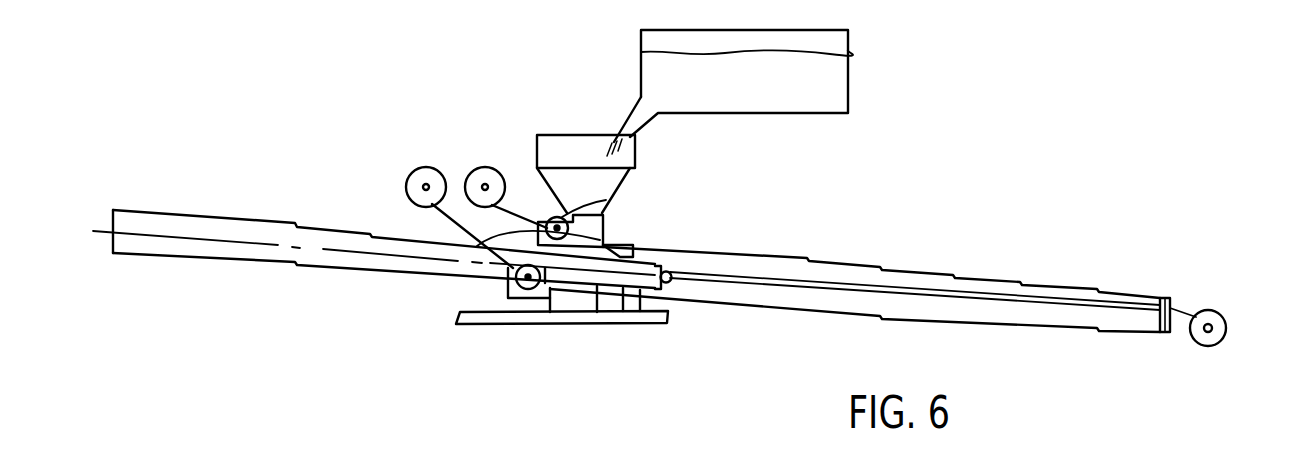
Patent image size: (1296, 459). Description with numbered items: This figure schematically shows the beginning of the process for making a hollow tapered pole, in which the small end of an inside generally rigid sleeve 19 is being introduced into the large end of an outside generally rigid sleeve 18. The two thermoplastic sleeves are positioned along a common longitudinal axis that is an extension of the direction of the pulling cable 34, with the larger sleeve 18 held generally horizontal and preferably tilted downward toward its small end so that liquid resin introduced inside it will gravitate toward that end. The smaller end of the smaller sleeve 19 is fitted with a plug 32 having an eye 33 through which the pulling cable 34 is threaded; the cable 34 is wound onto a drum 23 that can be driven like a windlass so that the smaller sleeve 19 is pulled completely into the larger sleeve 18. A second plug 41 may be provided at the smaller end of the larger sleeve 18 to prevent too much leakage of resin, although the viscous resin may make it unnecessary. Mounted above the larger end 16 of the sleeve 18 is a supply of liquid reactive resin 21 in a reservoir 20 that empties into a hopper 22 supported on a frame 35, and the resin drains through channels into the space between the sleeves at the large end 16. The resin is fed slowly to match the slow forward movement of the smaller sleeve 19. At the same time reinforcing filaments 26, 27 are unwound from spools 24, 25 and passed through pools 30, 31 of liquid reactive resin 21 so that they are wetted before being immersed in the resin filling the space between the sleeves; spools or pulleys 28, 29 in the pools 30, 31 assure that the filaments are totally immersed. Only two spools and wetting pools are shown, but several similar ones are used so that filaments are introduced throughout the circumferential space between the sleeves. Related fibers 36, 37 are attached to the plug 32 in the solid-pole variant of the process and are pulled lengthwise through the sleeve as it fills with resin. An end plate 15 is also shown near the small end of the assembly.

The end plate 15 is at (1160, 307).
The larger end 16 is at (612, 247).
The outside generally rigid sleeve 18 is at (780, 255).
The inside generally rigid sleeve 19 is at (337, 269).
The reservoir 20 is at (833, 78).
The liquid reactive resin 21 is at (608, 153).
The hopper 22 is at (606, 200).
The drum 23 is at (1218, 311).
The spool 24 is at (485, 167).
The spool 25 is at (426, 167).
The reinforcing filament 26 is at (518, 222).
The reinforcing filament 27 is at (440, 211).
The spool or pulley 28 is at (604, 228).
The spool or pulley 29 is at (508, 279).
The pool 30 is at (472, 246).
The pool 31 is at (530, 293).
The plug 32 is at (661, 283).
The eye 33 is at (673, 268).
The pulling cable 34 is at (1058, 302).
The frame 35 is at (588, 316).
The reinforcing fiber 36 is at (632, 247).
The reinforcing fiber 37 is at (597, 296).
The second plug 41 is at (1168, 300).